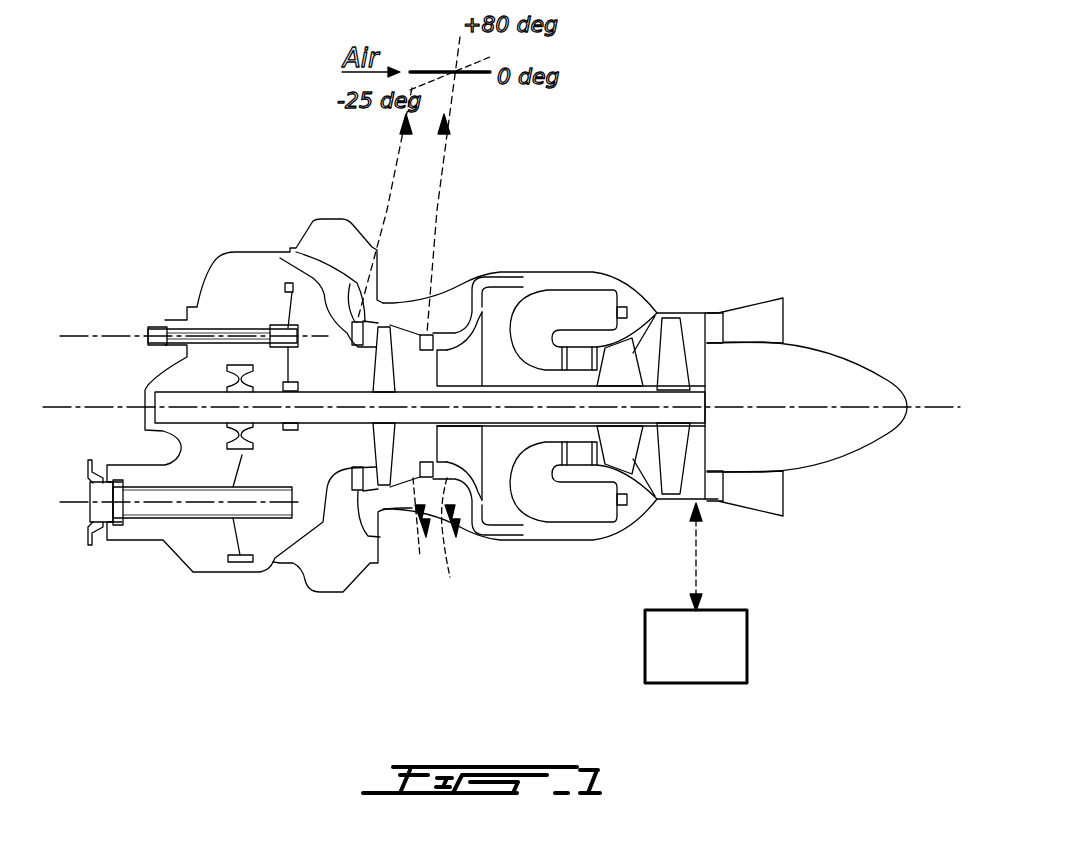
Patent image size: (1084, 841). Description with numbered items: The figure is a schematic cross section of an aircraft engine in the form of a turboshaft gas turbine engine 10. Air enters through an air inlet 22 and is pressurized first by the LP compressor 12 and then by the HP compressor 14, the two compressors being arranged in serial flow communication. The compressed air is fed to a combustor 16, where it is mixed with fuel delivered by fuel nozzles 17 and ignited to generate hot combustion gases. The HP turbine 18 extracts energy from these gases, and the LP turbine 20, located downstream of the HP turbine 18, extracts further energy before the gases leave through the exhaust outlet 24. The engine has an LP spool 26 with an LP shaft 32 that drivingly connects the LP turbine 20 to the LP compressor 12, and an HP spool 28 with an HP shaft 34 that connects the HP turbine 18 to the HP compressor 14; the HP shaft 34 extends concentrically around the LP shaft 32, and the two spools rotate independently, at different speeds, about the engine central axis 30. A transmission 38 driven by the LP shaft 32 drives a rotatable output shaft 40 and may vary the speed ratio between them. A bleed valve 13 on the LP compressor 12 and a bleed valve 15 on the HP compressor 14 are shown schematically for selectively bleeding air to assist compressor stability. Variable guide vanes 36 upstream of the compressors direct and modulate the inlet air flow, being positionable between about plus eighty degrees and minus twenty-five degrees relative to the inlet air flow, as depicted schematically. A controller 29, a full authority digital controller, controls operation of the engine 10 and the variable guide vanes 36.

The gas turbine engine 10 is at (759, 239).
The LP compressor 12 is at (380, 327).
The bleed valve 13 is at (417, 533).
The HP compressor 14 is at (462, 360).
The bleed valve 15 is at (449, 541).
The combustor 16 is at (577, 317).
The fuel nozzles 17 is at (640, 318).
The HP turbine 18 is at (617, 452).
The LP turbine 20 is at (672, 330).
The air inlet 22 is at (303, 572).
The exhaust outlet 24 is at (767, 500).
The LP spool 26 is at (405, 423).
The HP spool 28 is at (497, 428).
The controller 29 is at (747, 648).
The engine central axis 30 is at (945, 401).
The LP shaft 32 is at (332, 423).
The HP shaft 34 is at (549, 437).
The variable guide vanes 36 is at (333, 272).
The transmission 38 is at (213, 440).
The output shaft 40 is at (142, 510).